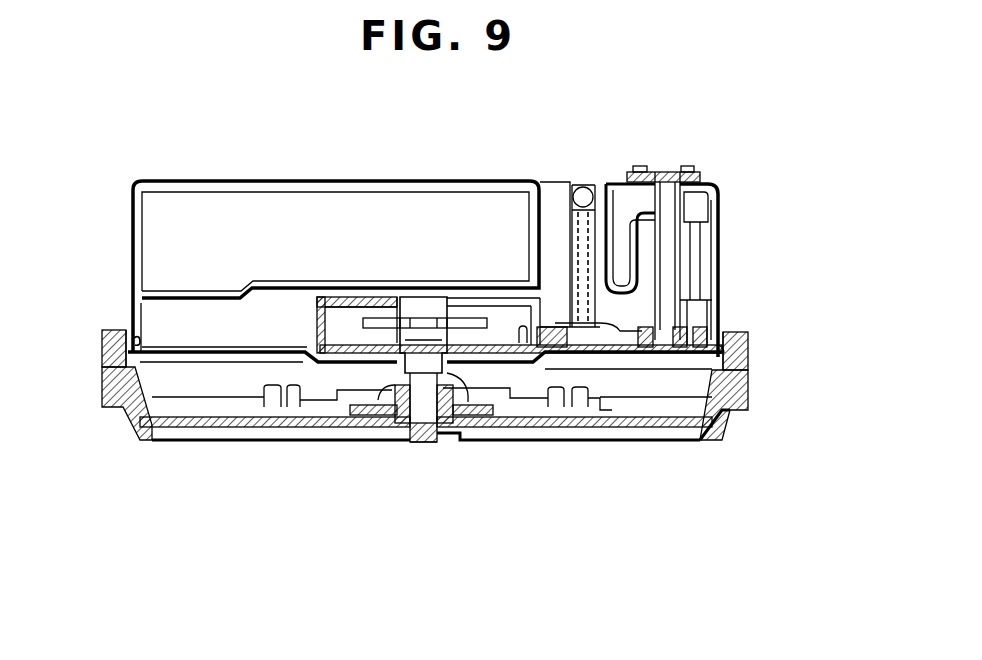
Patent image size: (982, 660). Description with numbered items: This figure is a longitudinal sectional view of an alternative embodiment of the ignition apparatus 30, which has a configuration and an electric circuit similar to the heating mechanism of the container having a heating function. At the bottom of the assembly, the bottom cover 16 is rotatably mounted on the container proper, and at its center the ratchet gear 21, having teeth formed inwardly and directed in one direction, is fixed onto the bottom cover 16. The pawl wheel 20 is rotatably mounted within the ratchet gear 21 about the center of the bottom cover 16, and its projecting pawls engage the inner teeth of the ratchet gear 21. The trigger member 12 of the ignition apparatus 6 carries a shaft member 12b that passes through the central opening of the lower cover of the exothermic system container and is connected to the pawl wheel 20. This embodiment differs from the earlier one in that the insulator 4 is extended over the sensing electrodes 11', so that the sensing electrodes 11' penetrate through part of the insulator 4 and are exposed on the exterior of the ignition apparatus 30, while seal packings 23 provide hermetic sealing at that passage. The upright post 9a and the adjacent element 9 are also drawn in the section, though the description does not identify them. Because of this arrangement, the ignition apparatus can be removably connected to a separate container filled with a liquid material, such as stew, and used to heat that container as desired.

The insulator 4 is at (212, 220).
The ignition apparatus 30 is at (343, 152).
The ignition apparatus 6 is at (592, 353).
The bottom cover 16 is at (655, 433).
The ratchet gear 21 is at (310, 405).
The pawl wheel 20 is at (395, 405).
The trigger member 12 is at (470, 423).
The shaft member 12b is at (426, 405).
The support post 9a is at (552, 205).
The screw 9 is at (586, 185).
The seal packings 23 is at (653, 168).
The sensing electrodes 11' is at (705, 268).